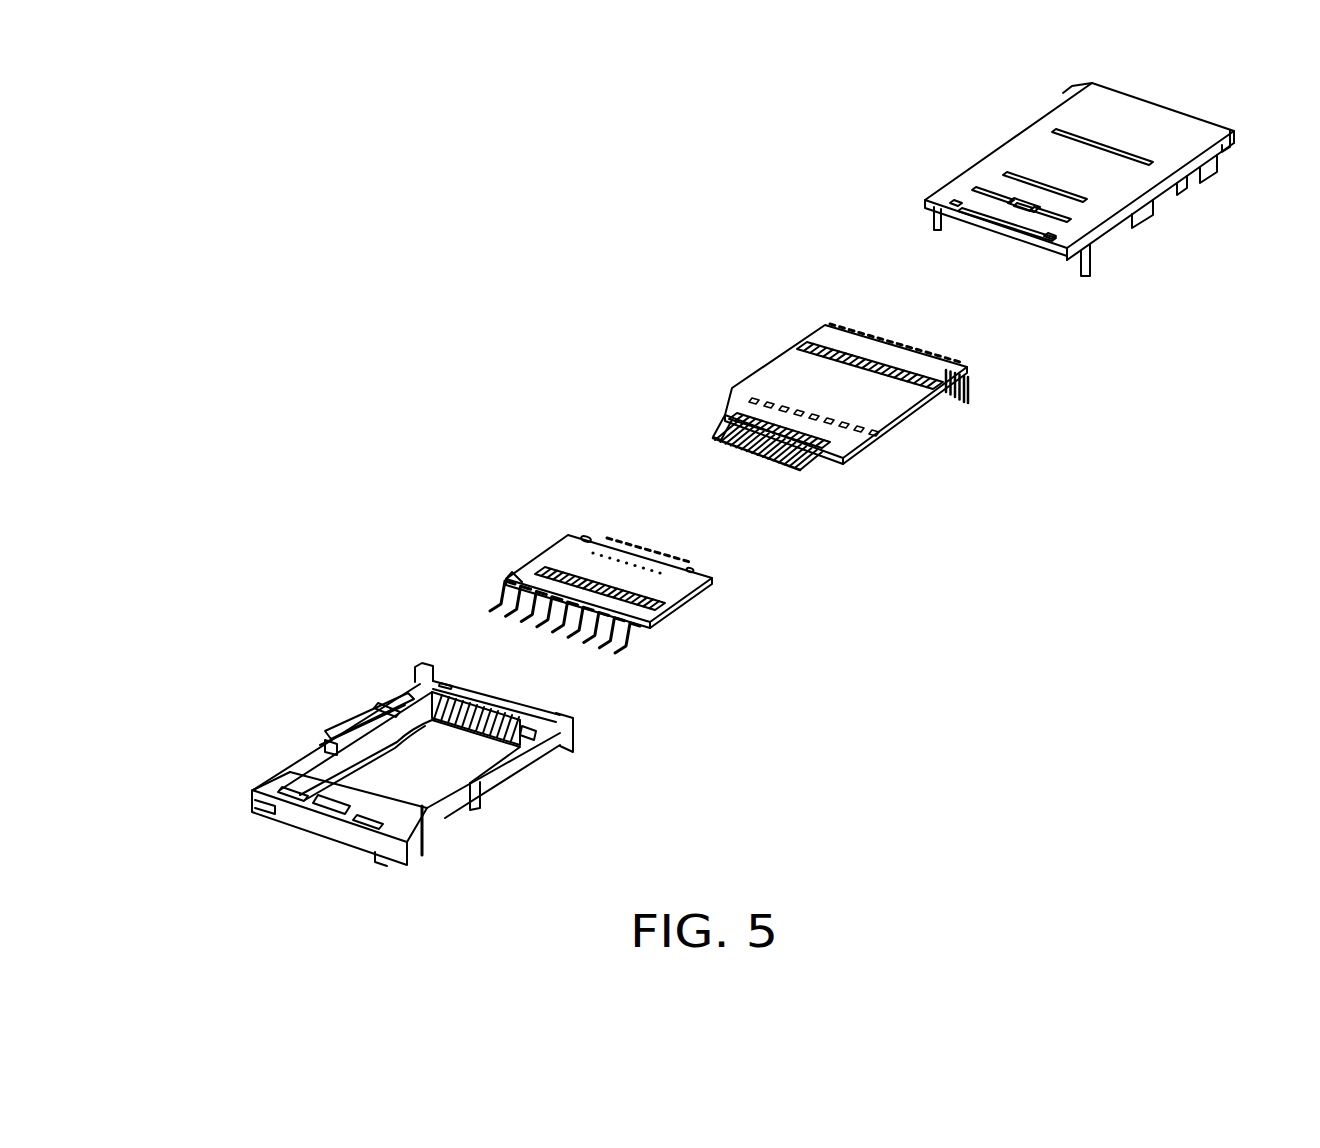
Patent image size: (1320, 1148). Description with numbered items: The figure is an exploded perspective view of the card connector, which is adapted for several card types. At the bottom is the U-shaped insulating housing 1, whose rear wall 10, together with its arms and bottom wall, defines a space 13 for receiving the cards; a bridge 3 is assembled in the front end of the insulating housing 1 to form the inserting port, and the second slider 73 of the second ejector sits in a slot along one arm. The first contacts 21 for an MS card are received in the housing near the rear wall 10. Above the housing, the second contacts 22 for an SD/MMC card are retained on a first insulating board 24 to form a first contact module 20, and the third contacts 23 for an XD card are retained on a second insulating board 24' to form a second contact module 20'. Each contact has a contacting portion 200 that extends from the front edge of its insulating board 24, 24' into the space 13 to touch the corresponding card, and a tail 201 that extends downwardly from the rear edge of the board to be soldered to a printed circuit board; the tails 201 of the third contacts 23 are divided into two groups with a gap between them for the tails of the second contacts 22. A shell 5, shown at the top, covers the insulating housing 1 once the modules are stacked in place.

The insulating housing 1 is at (400, 769).
The bridge 3 is at (340, 817).
The shell 5 is at (1147, 125).
The rear wall 10 is at (505, 713).
The space 13 is at (420, 785).
The first contact module 20 is at (666, 641).
The second contact module 20' is at (892, 440).
The first contacts 21 is at (478, 710).
The second contacts 22 is at (617, 633).
The third contacts 23 is at (713, 437).
The first insulating board 24 is at (661, 581).
The second insulating board 24' is at (872, 443).
The second slider 73 is at (350, 730).
The contacting portion 200 is at (727, 442).
The tail 201 is at (850, 327).